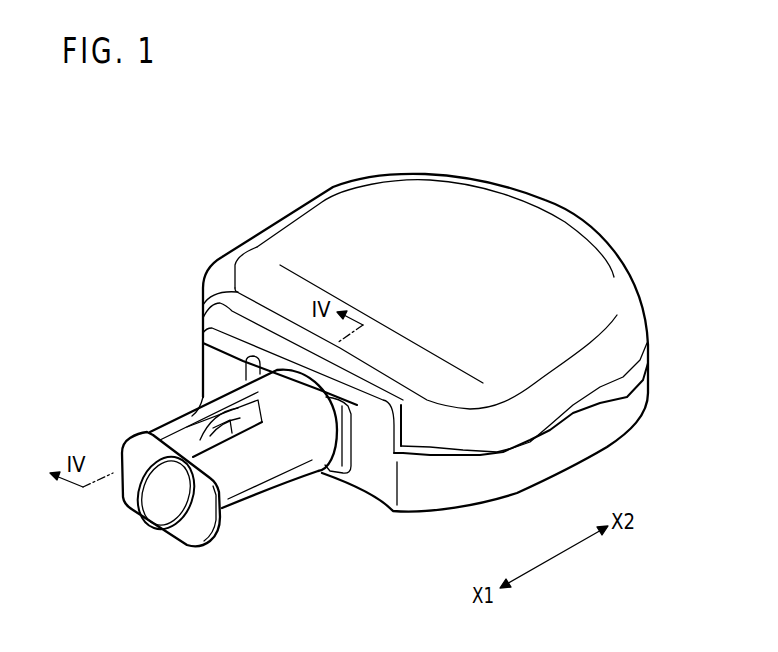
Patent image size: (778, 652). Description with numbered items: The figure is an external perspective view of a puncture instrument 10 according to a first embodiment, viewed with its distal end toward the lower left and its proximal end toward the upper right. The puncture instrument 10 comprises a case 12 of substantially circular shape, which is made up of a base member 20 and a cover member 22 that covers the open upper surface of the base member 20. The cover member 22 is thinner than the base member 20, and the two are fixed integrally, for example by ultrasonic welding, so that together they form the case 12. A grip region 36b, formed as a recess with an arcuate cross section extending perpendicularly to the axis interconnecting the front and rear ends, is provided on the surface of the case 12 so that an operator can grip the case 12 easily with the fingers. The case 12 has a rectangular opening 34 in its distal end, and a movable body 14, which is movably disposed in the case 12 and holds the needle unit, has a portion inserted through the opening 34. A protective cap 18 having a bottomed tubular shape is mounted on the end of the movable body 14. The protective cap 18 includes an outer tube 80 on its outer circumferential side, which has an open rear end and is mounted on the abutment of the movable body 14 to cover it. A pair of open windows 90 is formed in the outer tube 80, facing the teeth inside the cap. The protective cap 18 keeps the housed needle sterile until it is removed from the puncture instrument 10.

The puncture instrument 10 is at (622, 120).
The case 12 is at (614, 229).
The movable body 14 is at (346, 481).
The protective cap 18 is at (174, 534).
The base member 20 is at (528, 463).
The cover member 22 is at (342, 222).
The rectangular opening 34 is at (240, 374).
The grip region 36b is at (265, 267).
The outer tube 80 is at (250, 473).
The open windows 90 is at (207, 410).